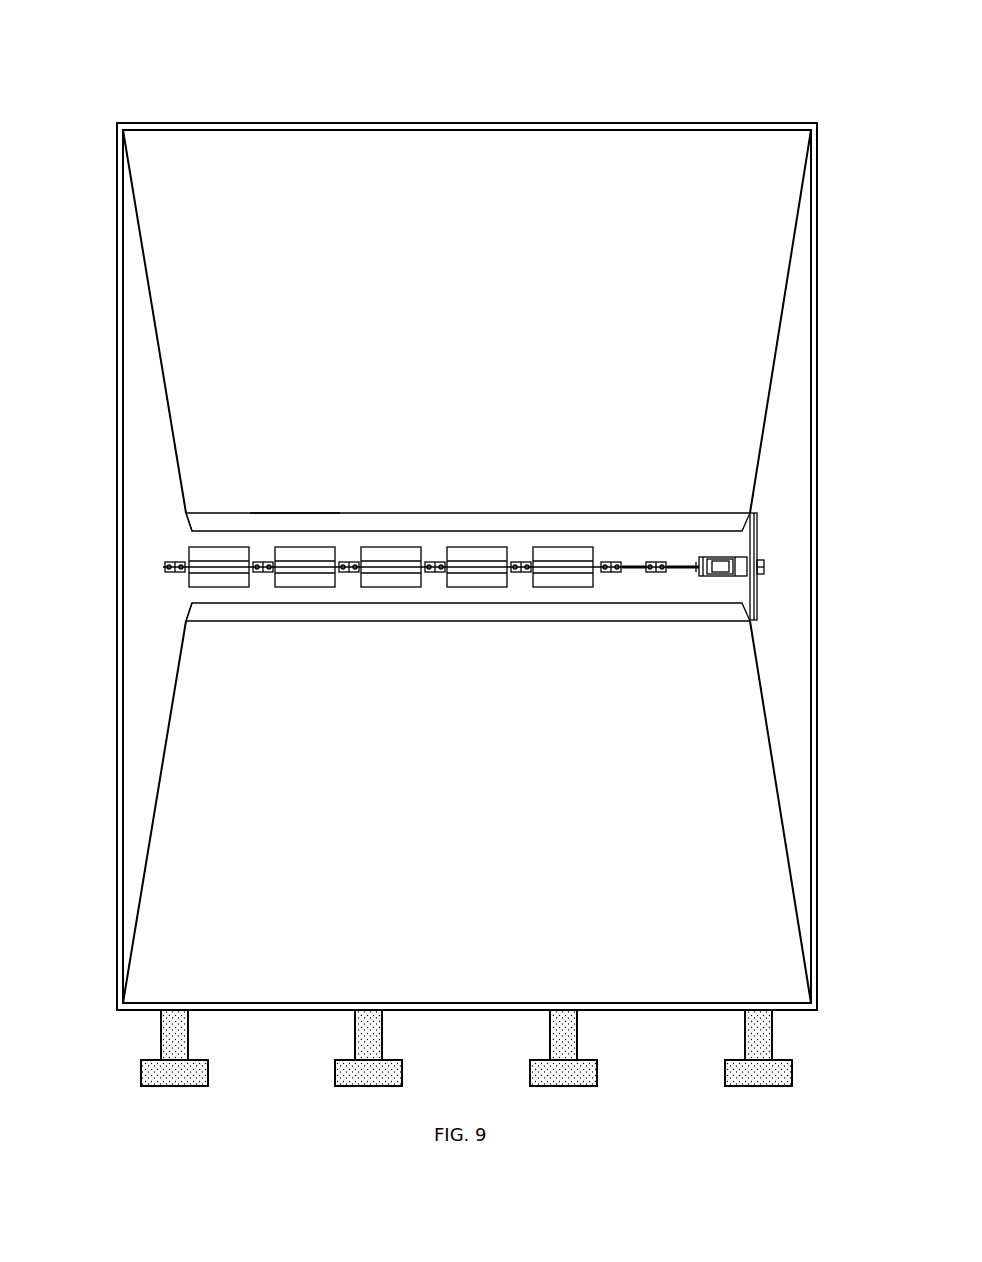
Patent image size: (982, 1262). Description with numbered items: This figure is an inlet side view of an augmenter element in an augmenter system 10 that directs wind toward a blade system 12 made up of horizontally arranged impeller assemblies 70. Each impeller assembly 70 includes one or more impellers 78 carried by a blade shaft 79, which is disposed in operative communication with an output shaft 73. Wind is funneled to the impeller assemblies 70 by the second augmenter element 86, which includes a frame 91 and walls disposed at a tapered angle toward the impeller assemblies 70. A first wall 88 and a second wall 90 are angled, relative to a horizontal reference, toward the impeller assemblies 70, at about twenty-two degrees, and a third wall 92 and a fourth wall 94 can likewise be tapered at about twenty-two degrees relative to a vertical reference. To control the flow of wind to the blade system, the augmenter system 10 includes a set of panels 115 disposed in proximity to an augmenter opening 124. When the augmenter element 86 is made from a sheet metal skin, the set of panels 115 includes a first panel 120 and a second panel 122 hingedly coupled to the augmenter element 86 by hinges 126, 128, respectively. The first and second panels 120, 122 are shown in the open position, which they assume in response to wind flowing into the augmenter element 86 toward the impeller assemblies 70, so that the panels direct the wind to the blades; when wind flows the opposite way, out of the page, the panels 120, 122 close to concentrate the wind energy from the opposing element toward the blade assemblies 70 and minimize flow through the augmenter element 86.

The augmenter system 10 is at (665, 48).
The blade system 12 is at (455, 481).
The impeller assembly 70 is at (470, 562).
The output shaft 73 is at (757, 538).
The impeller 78 is at (560, 555).
The blade shaft 79 is at (632, 565).
The second augmenter element 86 is at (477, 130).
The first wall 88 is at (783, 210).
The second wall 90 is at (172, 823).
The frame 91 is at (188, 1038).
The third wall 92 is at (800, 378).
The fourth wall 94 is at (143, 405).
The set of panels 115 is at (294, 513).
The first panel 120 is at (202, 520).
The second panel 122 is at (202, 611).
The augmenter opening 124 is at (738, 590).
The hinge 126 is at (387, 513).
The hinge 128 is at (385, 621).